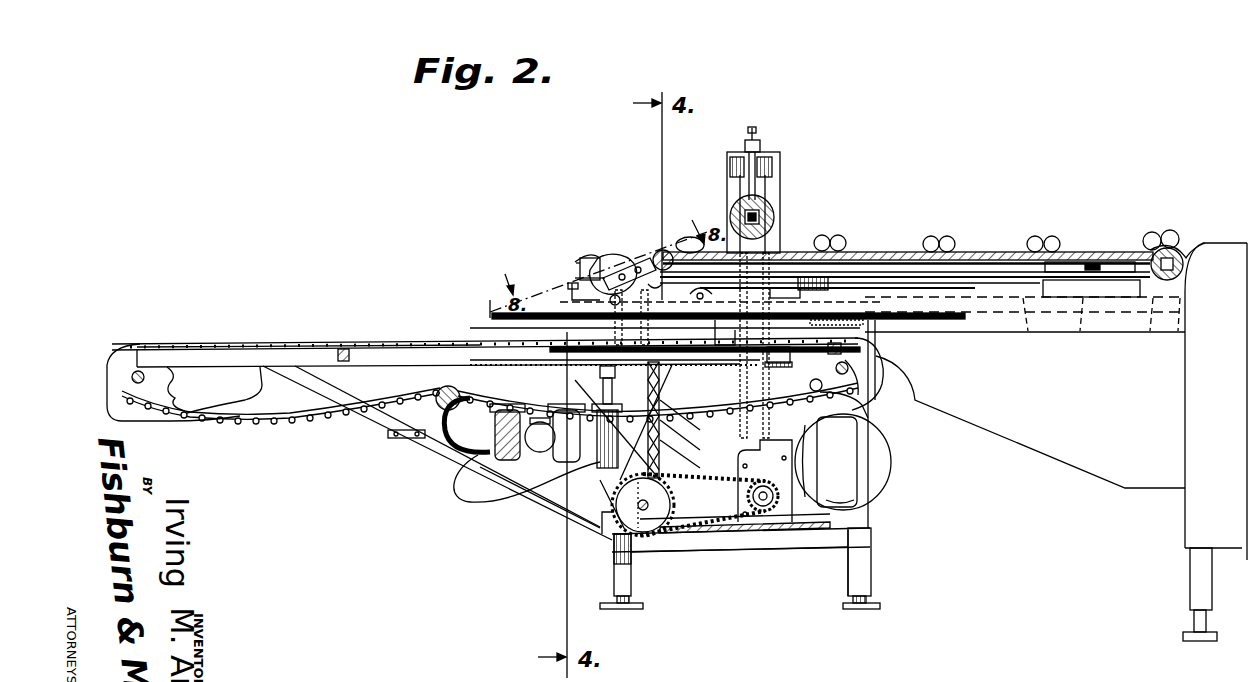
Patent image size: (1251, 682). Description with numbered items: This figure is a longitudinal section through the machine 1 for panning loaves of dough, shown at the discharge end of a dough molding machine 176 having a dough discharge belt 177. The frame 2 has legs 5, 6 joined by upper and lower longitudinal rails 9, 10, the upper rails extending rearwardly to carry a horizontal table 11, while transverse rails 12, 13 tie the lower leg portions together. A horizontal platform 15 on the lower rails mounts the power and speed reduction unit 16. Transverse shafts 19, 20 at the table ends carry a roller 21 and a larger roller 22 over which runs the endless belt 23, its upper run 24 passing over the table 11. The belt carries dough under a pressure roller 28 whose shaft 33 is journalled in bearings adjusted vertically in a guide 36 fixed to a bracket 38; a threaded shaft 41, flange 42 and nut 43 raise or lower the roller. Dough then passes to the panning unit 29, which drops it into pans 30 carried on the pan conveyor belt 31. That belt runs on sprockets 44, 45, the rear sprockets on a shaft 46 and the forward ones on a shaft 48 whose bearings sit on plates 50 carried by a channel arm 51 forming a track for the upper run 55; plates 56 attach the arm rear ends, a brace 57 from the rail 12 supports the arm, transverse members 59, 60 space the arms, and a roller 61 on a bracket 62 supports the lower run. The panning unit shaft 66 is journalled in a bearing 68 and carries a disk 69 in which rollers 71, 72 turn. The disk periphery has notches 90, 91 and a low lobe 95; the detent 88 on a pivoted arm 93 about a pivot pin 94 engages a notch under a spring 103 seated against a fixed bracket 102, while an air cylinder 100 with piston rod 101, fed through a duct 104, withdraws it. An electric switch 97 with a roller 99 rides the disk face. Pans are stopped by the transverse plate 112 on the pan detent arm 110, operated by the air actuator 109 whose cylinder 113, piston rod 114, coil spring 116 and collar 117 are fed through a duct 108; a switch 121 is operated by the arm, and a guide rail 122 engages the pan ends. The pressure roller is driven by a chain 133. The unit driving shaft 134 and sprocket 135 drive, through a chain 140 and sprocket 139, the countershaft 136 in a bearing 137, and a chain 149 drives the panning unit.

The machine 1 is at (872, 537).
The frame 2 is at (848, 555).
The leg 5 is at (614, 578).
The leg 6 is at (871, 574).
The upper longitudinal rail 9 is at (965, 290).
The lower longitudinal rail 10 is at (748, 548).
The horizontal table 11 is at (1000, 255).
The transverse rail 12 is at (612, 545).
The transverse rail 13 is at (872, 544).
The horizontal platform 15 is at (835, 524).
The power and speed reduction unit 16 is at (875, 461).
The transverse shaft 19 is at (664, 250).
The transverse shaft 20 is at (1182, 250).
The roller 21 is at (668, 258).
The roller 22 is at (1184, 270).
The endless belt 23 is at (1092, 258).
The upper run 24 is at (953, 252).
The pressure roller 28 is at (773, 208).
The panning unit 29 is at (640, 258).
The pans 30 is at (1025, 329).
The conveyor belt 31 is at (298, 343).
The shaft 33 is at (760, 218).
The guide 36 is at (772, 185).
The bracket 38 is at (728, 166).
The threaded shaft 41 is at (755, 130).
The flange 42 is at (778, 152).
The nut 43 is at (760, 140).
The sprockets 44 is at (112, 362).
The sprockets 45 is at (875, 374).
The shaft 46 is at (866, 400).
The shaft 48 is at (132, 378).
The plates 50 is at (190, 365).
The arm 51 is at (250, 350).
The upper run 55 is at (410, 343).
The plates 56 is at (870, 420).
The brace 57 is at (372, 421).
The transverse member 59 is at (344, 348).
The transverse member 60 is at (845, 350).
The roller 61 is at (420, 437).
The bracket 62 is at (455, 362).
The shaft 66 is at (625, 256).
The bearing 68 is at (550, 352).
The disk 69 is at (582, 262).
The roller 71 is at (578, 278).
The roller 72 is at (660, 284).
The detent 88 is at (725, 346).
The notch 90 is at (608, 256).
The notch 91 is at (570, 302).
The arm 93 is at (772, 287).
The pivot pin 94 is at (805, 275).
The low lobe portion 95 is at (604, 258).
The electric switch 97 is at (580, 270).
The roller 99 is at (568, 292).
The air cylinder 100 is at (712, 292).
The piston rod 101 is at (690, 320).
The bracket 102 is at (662, 380).
The spring 103 is at (675, 368).
The duct 104 is at (530, 521).
The duct 108 is at (560, 458).
The air operated actuator 109 is at (680, 483).
The arm 110 is at (603, 356).
The transverse plate 112 is at (545, 329).
The cylinder 113 is at (658, 450).
The piston rod 114 is at (668, 406).
The coil spring 116 is at (682, 442).
The collar 117 is at (676, 422).
The switch 121 is at (812, 383).
The guide rail 122 is at (490, 310).
The chain 133 is at (812, 323).
The driving shaft 134 is at (772, 510).
The sprocket 135 is at (766, 504).
The countershaft 136 is at (648, 537).
The bearing 137 is at (714, 565).
The sprocket 139 is at (600, 526).
The chain 140 is at (750, 480).
The chain 149 is at (618, 518).
The dough molding machine 176 is at (1012, 448).
The dough discharge belt 177 is at (1228, 243).